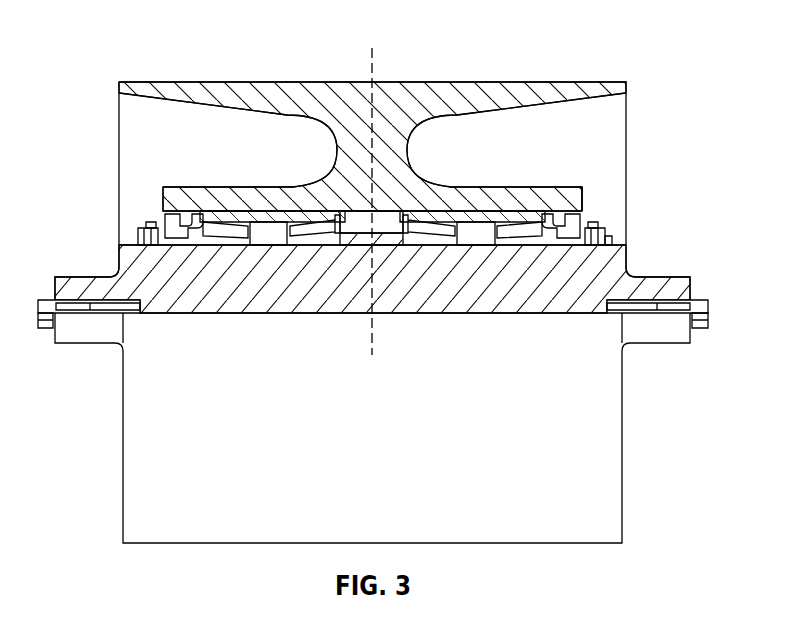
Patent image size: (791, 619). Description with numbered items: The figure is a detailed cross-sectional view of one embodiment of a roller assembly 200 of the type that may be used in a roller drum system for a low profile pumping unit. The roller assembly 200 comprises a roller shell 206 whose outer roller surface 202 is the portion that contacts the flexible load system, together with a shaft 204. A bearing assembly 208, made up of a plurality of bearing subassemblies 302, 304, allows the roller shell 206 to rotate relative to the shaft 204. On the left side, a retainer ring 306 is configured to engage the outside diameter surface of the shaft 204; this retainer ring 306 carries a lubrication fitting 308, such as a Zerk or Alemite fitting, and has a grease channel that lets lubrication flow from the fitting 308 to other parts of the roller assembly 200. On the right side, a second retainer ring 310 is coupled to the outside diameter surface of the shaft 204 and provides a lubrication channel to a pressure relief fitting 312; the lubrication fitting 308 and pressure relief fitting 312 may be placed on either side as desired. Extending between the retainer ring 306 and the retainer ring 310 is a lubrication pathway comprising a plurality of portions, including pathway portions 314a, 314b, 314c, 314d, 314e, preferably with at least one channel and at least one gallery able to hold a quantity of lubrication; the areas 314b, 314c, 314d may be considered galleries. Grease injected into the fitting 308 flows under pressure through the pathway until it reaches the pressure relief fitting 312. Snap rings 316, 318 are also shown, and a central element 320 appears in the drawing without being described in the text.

The roller assembly 200 is at (127, 58).
The outer roller surface 202 is at (578, 457).
The shaft 204 is at (640, 342).
The roller shell 206 is at (527, 93).
The bearing assembly 208 is at (560, 198).
The bearing subassembly 302 is at (258, 222).
The bearing subassembly 304 is at (500, 220).
The retainer ring 306 is at (140, 237).
The lubrication fitting 308 is at (150, 226).
The second retainer ring 310 is at (606, 238).
The pressure relief fitting 312 is at (606, 230).
The pathway portion 314a is at (197, 240).
The pathway portion 314b is at (275, 242).
The pathway portion 314c is at (350, 242).
The pathway portion 314d is at (440, 242).
The pathway portion 314e is at (480, 242).
The snap ring 316 is at (176, 222).
The snap ring 318 is at (596, 220).
The central support 320 is at (332, 246).